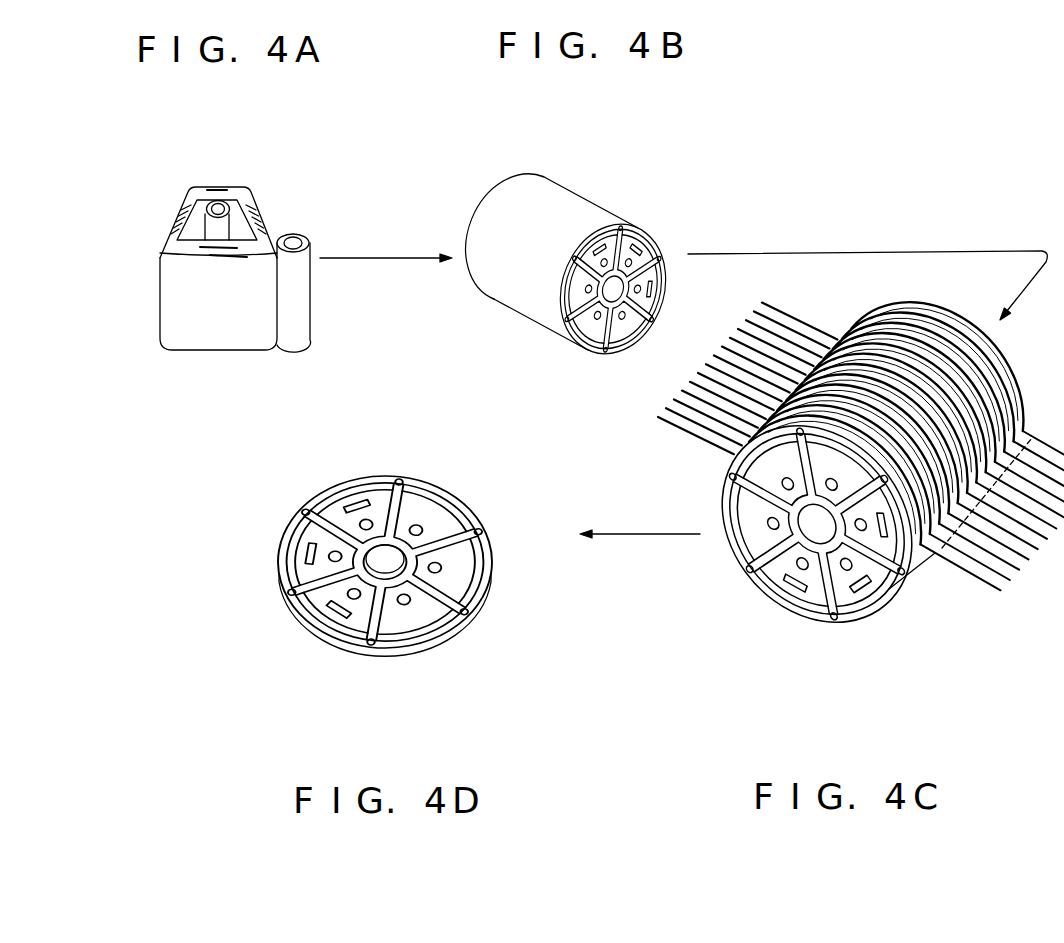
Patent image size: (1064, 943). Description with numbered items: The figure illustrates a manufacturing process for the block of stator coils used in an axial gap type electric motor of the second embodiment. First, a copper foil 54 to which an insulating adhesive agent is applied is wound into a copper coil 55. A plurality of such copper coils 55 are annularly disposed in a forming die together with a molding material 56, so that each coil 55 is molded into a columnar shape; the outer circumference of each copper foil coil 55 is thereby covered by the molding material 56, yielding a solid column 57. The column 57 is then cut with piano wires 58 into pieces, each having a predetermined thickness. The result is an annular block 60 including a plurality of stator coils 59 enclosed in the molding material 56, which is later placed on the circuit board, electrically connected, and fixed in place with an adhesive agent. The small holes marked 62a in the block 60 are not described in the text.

In FIG. 4A, the copper foil 54 is at (217, 338).
In FIG. 4A, the copper coil 55 is at (161, 240).
In FIG. 4B, the copper coil 55 is at (653, 253).
In FIG. 4C, the copper coil 55 is at (790, 614).
In FIG. 4B, the molding material 56 is at (587, 213).
In FIG. 4D, the molding material 56 is at (340, 648).
In FIG. 4B, the solid column 57 is at (569, 194).
In FIG. 4C, the solid column 57 is at (746, 577).
In FIG. 4C, the piano wires 58 is at (975, 580).
In FIG. 4D, the stator coils 59 is at (288, 553).
In FIG. 4D, the annular block 60 is at (291, 618).
In FIG. 4D, the positioning hole 62a is at (298, 514).